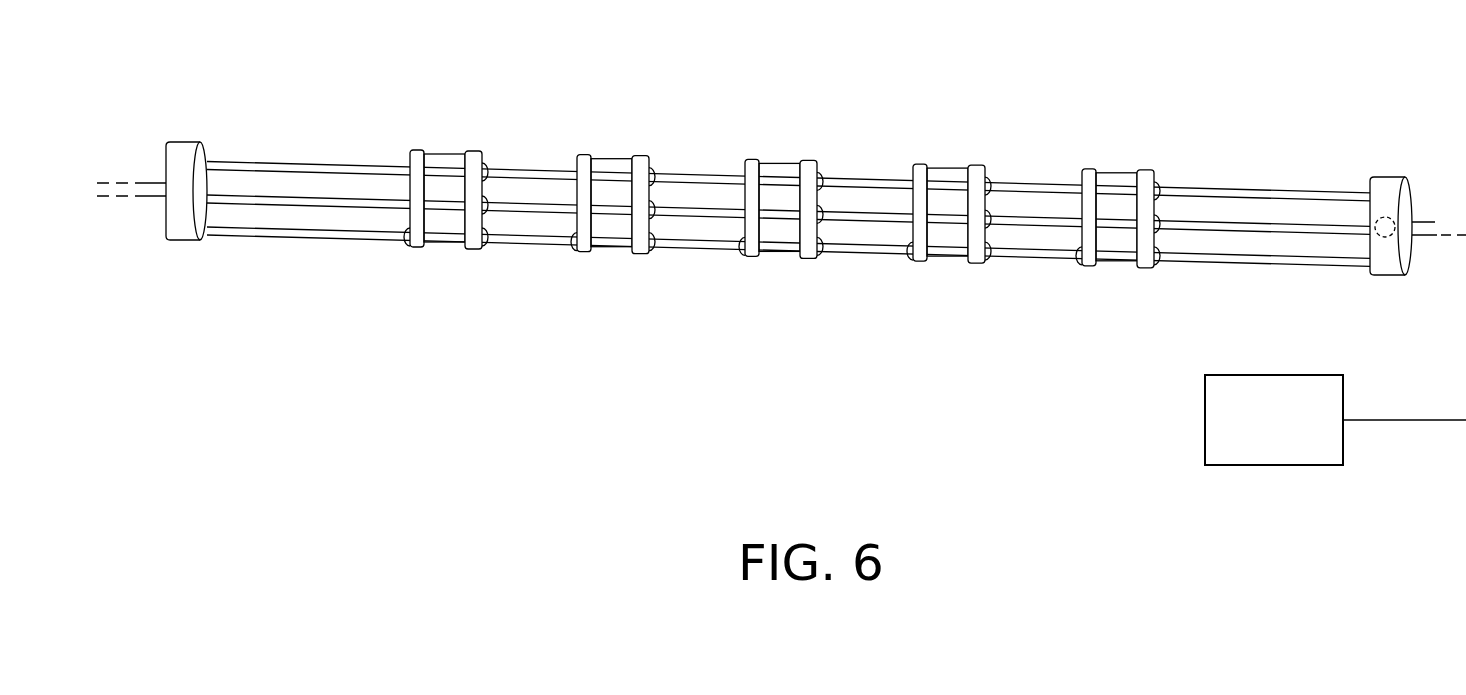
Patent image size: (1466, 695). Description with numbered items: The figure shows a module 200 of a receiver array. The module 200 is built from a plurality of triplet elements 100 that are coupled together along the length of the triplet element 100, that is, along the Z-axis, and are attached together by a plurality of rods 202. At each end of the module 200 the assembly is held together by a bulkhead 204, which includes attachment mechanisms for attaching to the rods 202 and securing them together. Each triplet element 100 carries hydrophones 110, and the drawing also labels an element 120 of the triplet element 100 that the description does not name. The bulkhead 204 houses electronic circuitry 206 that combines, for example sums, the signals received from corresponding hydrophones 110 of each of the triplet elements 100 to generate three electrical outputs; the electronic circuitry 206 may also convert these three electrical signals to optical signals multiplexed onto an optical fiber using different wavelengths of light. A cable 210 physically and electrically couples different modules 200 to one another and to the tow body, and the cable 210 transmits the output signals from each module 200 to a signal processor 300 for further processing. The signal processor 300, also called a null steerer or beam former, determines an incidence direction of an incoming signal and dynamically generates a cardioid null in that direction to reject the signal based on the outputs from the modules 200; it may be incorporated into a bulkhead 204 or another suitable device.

The triplet element 100 is at (492, 105).
The hydrophone 110 is at (448, 171).
The ring 120 is at (395, 180).
The module 200 is at (1066, 58).
The rods 202 is at (1251, 190).
The bulkhead 204 is at (1391, 177).
The electronic circuitry 206 is at (1386, 239).
The cable 210 is at (1419, 240).
The signal processor 300 is at (1244, 375).